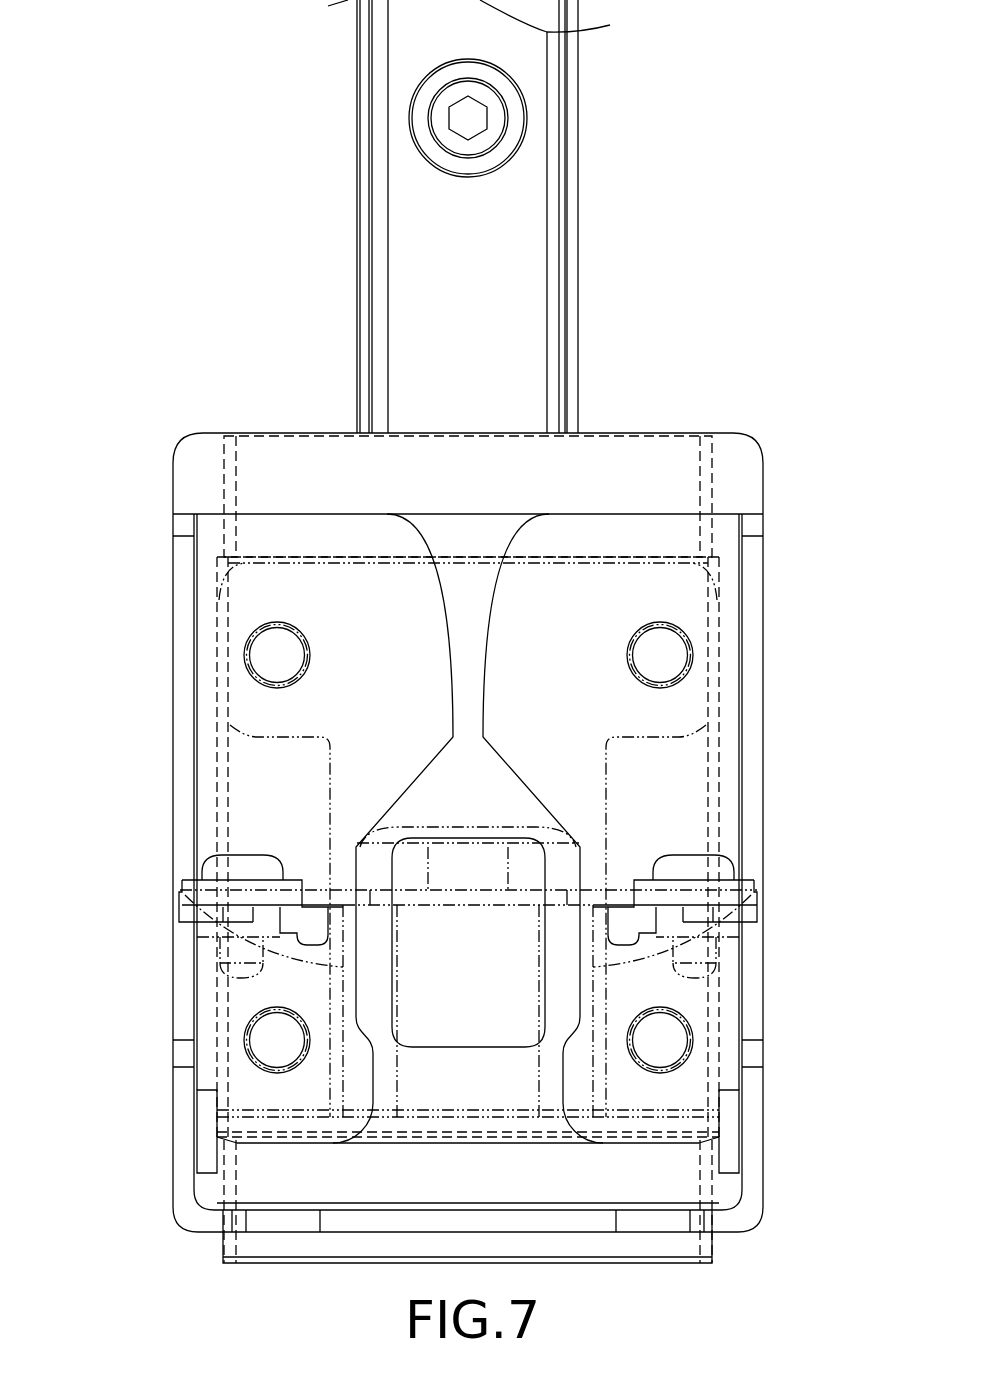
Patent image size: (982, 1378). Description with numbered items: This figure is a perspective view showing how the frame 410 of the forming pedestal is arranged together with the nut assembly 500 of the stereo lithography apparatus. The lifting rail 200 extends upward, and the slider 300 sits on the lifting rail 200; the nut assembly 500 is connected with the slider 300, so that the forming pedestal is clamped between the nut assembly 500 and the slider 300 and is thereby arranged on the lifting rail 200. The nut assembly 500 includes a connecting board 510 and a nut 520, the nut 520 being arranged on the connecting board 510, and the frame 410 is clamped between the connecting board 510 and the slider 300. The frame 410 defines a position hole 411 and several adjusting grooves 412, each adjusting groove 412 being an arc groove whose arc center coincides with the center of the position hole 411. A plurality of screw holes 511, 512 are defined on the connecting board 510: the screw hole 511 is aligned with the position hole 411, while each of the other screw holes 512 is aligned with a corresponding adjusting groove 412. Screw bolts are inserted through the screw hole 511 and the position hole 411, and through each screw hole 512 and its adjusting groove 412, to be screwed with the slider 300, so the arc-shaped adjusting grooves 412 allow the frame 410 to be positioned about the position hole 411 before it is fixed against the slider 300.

The lifting rail 200 is at (520, 272).
The slider 300 is at (708, 469).
The frame 410 is at (763, 761).
The position hole 411 is at (690, 655).
The adjusting groove 412 is at (248, 655).
The nut assembly 500 is at (90, 802).
The connecting board 510 is at (340, 815).
The screw hole 511 is at (685, 630).
The screw hole 512 is at (248, 630).
The nut 520 is at (185, 888).